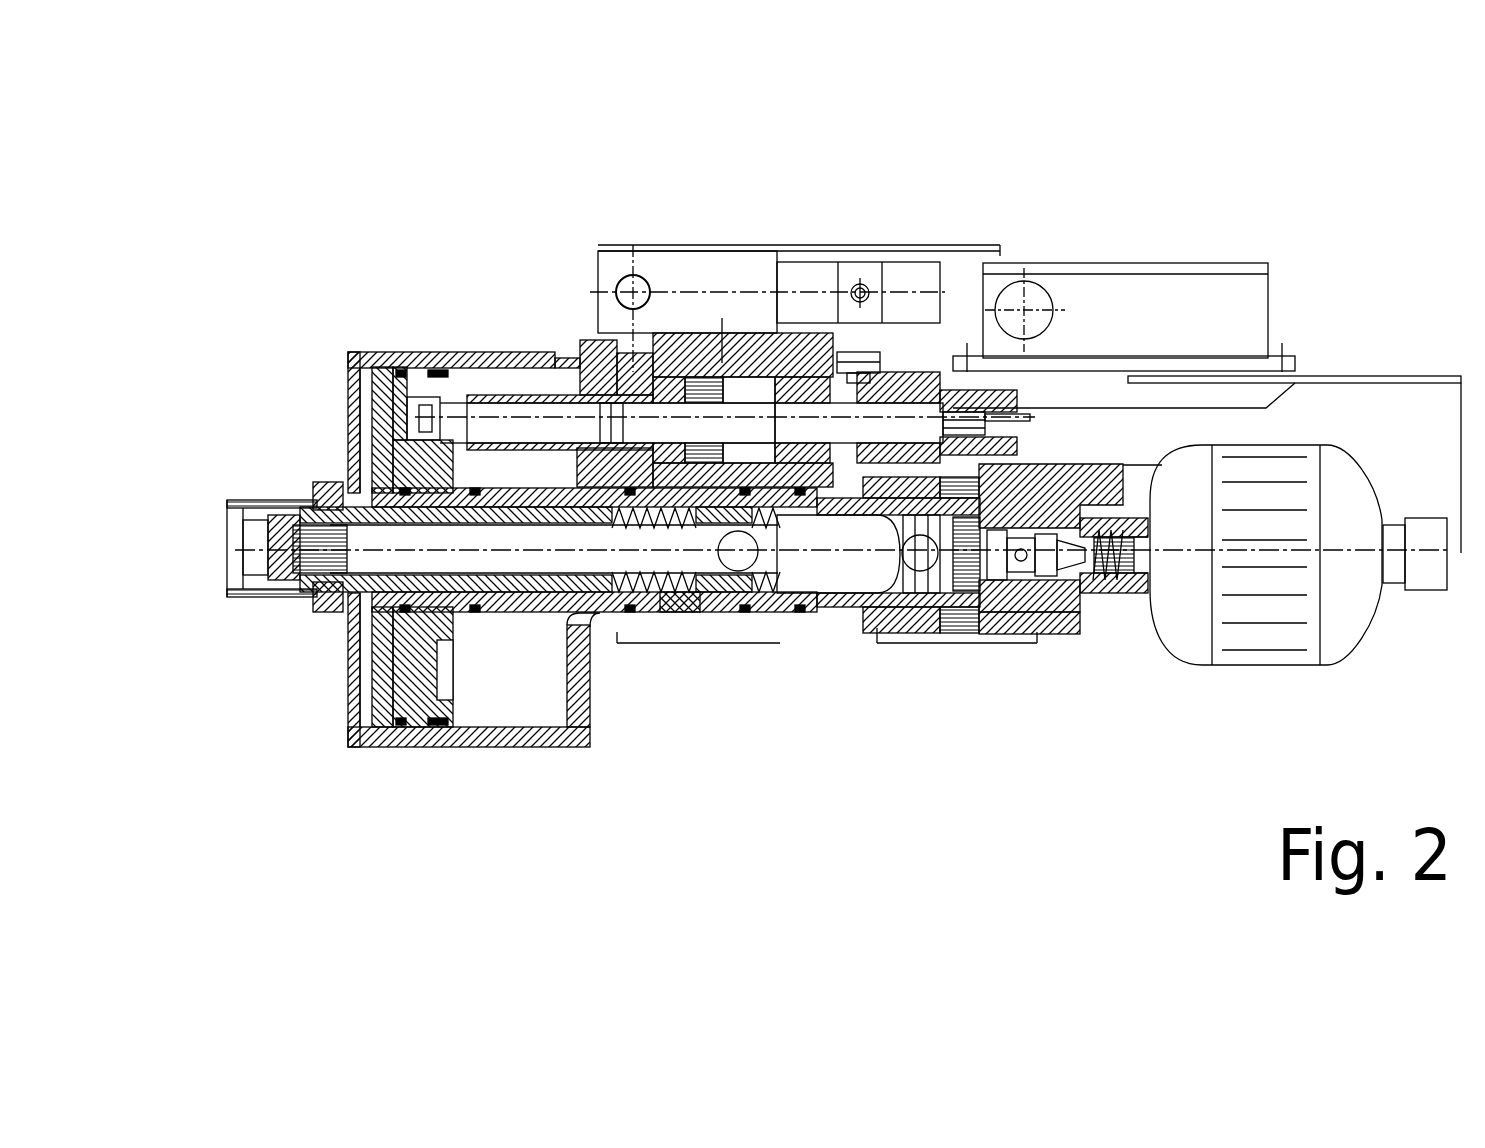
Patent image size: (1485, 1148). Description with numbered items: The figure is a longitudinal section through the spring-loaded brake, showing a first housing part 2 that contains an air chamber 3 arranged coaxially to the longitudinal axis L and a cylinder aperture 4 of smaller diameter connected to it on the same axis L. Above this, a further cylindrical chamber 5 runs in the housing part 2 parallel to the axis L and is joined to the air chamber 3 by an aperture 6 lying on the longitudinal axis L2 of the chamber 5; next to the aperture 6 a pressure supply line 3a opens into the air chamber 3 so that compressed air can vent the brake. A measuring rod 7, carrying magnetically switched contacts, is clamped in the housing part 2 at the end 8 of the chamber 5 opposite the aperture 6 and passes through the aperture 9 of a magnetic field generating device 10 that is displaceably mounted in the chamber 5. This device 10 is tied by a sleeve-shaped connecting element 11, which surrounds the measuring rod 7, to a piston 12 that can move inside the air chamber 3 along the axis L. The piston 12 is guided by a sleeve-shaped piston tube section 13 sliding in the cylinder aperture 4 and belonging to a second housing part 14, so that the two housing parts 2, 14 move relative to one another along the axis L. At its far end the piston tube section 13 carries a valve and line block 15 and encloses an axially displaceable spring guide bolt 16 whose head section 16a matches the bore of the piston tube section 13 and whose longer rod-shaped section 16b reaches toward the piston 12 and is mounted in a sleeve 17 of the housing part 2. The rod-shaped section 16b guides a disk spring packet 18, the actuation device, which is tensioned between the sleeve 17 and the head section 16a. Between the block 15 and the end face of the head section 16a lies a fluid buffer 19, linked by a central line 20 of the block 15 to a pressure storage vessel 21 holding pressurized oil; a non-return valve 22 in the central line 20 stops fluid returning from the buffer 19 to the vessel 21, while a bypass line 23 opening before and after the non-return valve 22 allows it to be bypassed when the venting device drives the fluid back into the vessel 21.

The first housing part 2 is at (348, 352).
The air chamber 3 is at (513, 373).
The pressure supply line 3a is at (572, 358).
The cylinder aperture 4 is at (770, 618).
The chamber 5 is at (885, 415).
The aperture 6 is at (498, 385).
The measuring rod 7 is at (925, 368).
The end of the chamber 8 is at (985, 372).
The aperture of the magnetic field generating device 9 is at (745, 460).
The magnetic field generating device 10 is at (715, 378).
The sleeve-shaped connecting element 11 is at (487, 373).
The piston 12 is at (398, 462).
The piston tube section 13 is at (700, 568).
The second housing part 14 is at (896, 630).
The valve and line block 15 is at (995, 630).
The spring guide bolt 16 is at (835, 362).
The head section 16a is at (832, 570).
The rod-shaped section 16b is at (577, 558).
The sleeve 17 is at (307, 590).
The disk spring packet 18 is at (705, 612).
The fluid buffer 19 is at (968, 612).
The central line 20 is at (1085, 612).
The pressure storage vessel 21 is at (1305, 612).
The non-return valve 22 is at (1037, 637).
The bypass line 23 is at (1015, 520).
The longitudinal axis L is at (250, 537).
The longitudinal axis of the chamber L2 is at (636, 412).